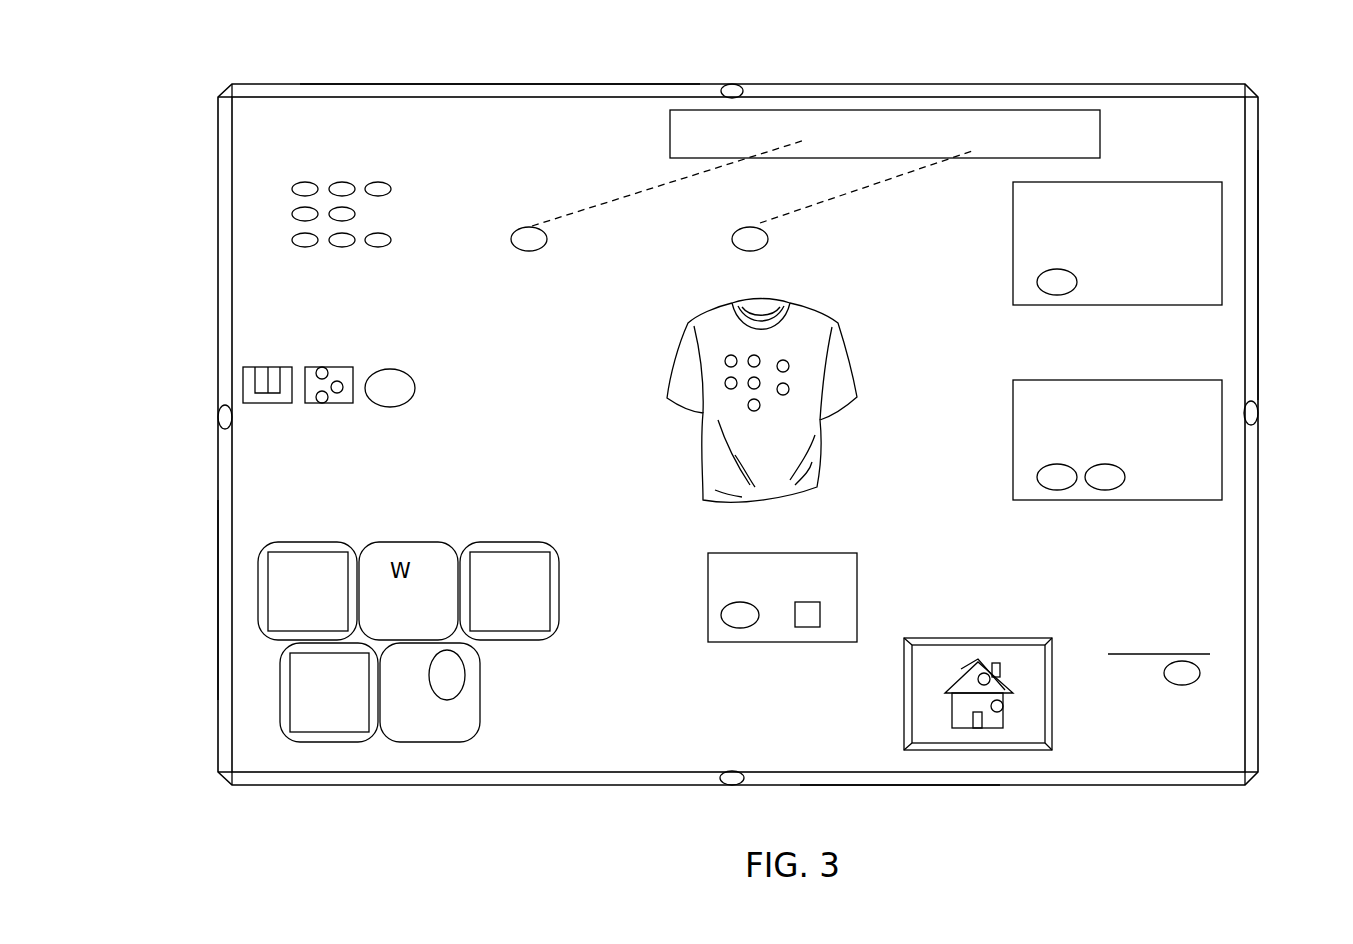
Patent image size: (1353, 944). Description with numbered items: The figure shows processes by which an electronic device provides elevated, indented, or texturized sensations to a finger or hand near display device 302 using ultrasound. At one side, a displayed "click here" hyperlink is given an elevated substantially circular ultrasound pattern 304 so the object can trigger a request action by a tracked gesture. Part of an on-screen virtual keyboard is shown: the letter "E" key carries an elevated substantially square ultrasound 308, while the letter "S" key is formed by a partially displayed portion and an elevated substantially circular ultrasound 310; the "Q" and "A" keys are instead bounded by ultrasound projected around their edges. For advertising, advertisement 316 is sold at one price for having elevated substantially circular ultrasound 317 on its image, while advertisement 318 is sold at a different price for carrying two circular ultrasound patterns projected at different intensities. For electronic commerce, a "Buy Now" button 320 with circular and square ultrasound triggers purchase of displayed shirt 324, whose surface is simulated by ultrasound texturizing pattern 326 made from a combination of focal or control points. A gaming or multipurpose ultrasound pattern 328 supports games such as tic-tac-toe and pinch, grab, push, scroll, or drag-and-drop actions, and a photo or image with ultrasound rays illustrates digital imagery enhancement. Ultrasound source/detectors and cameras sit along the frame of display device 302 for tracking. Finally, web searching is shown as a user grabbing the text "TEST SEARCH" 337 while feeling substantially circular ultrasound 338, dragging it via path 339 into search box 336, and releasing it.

The display device 302 is at (932, 83).
The elevated substantially circular ultrasound pattern 304 is at (1182, 685).
The elevated substantially square ultrasound 308 is at (527, 622).
The elevated substantially circular ultrasound 310 is at (450, 663).
The advertisement 316 is at (1148, 182).
The elevated substantially circular ultrasound 317 is at (1052, 295).
The advertisement 318 is at (1013, 468).
The buy now region 320 is at (708, 578).
The shirt 324 is at (800, 310).
The ultrasound texturizing pattern 326 is at (789, 364).
The ultrasound pattern 328 is at (368, 184).
The search box 336 is at (968, 160).
The text "TEST SEARCH" 337 is at (990, 160).
The substantially circular ultrasound 338 is at (730, 252).
The path 339 is at (770, 215).